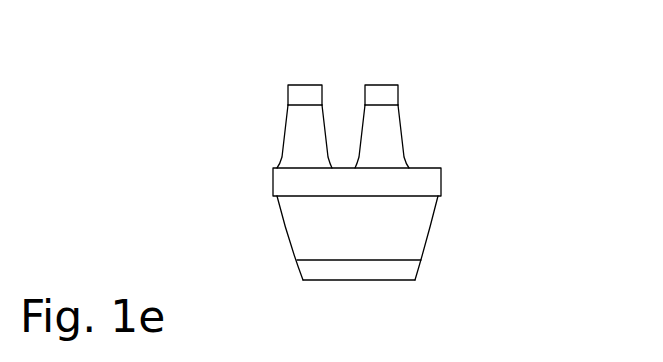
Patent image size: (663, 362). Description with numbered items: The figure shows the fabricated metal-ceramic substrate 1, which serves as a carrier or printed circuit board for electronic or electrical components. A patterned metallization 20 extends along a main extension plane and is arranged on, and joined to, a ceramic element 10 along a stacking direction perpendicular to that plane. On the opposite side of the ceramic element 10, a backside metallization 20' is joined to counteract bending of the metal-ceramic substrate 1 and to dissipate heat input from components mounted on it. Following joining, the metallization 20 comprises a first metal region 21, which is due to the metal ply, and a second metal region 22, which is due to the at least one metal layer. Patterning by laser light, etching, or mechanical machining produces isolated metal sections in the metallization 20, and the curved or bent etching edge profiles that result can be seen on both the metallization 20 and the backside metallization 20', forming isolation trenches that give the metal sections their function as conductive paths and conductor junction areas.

The metal-ceramic substrate 1 is at (478, 91).
The ceramic element 10 is at (413, 218).
The metallization 20 is at (376, 54).
The backside metallization 20' is at (412, 285).
The first metal region 21 is at (293, 84).
The second metal region 22 is at (297, 139).